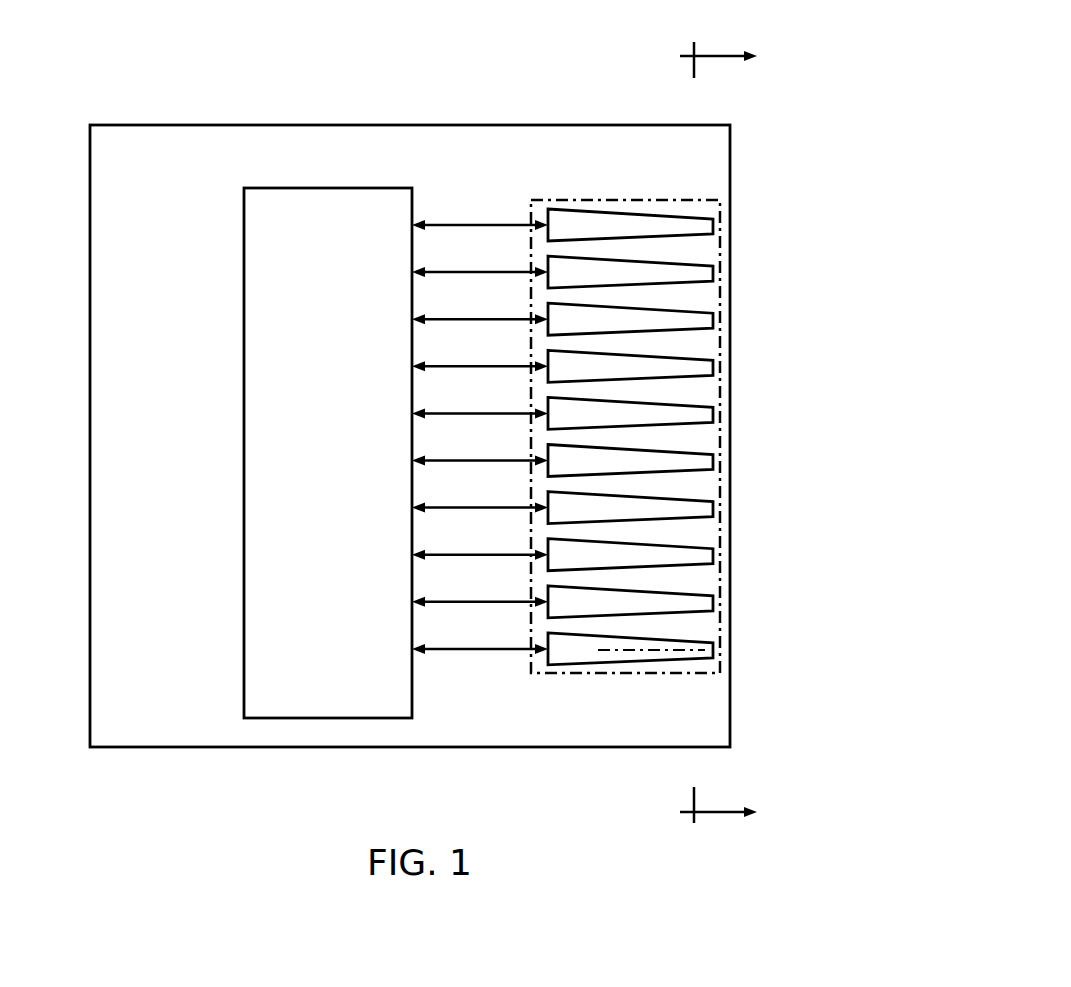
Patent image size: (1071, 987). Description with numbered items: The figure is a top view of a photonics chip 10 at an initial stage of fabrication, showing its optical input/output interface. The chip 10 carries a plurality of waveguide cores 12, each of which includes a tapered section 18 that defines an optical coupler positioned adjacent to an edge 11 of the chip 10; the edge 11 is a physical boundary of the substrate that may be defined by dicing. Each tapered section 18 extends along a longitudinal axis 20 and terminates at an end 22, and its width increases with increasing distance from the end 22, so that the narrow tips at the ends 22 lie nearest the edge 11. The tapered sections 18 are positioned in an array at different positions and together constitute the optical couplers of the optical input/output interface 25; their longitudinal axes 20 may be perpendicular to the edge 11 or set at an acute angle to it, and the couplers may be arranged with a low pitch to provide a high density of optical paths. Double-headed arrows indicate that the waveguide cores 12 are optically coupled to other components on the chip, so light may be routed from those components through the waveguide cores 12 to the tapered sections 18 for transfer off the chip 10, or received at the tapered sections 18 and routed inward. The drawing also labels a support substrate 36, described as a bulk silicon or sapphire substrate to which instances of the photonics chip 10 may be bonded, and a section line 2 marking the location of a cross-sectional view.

The photonics chip 10 is at (150, 76).
The edge 11 is at (731, 720).
The support substrate 36 is at (265, 458).
The tapered section 18 is at (600, 188).
The optical input/output interface 25 is at (713, 221).
The waveguide core 12 is at (687, 273).
The longitudinal axis 20 is at (713, 316).
The end 22 is at (713, 410).
The section line for FIG. 2 is at (729, 433).